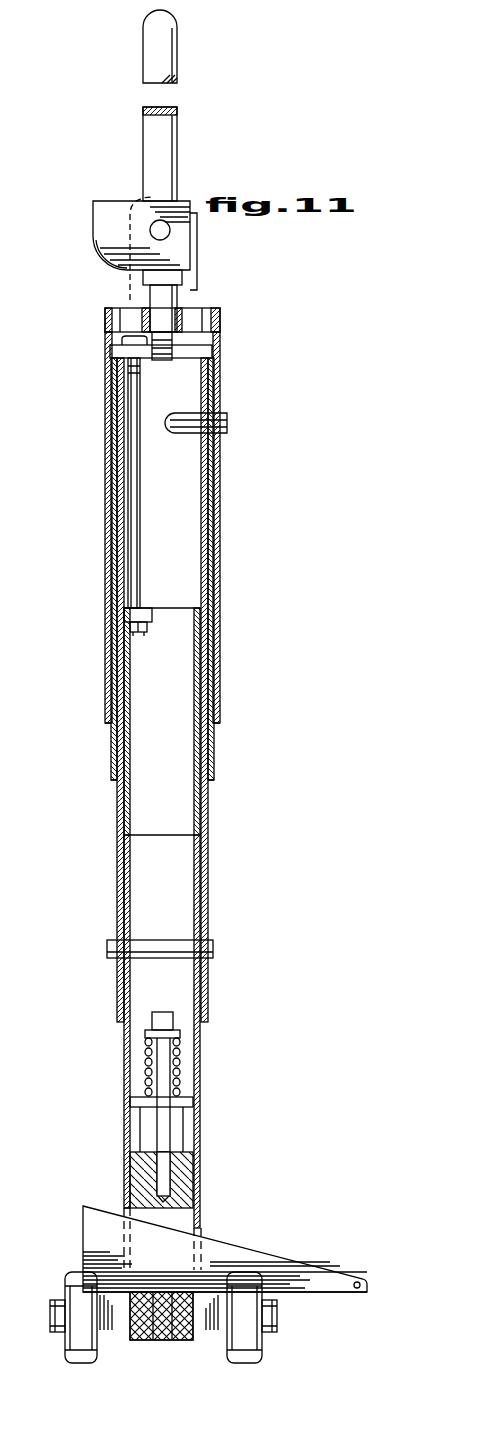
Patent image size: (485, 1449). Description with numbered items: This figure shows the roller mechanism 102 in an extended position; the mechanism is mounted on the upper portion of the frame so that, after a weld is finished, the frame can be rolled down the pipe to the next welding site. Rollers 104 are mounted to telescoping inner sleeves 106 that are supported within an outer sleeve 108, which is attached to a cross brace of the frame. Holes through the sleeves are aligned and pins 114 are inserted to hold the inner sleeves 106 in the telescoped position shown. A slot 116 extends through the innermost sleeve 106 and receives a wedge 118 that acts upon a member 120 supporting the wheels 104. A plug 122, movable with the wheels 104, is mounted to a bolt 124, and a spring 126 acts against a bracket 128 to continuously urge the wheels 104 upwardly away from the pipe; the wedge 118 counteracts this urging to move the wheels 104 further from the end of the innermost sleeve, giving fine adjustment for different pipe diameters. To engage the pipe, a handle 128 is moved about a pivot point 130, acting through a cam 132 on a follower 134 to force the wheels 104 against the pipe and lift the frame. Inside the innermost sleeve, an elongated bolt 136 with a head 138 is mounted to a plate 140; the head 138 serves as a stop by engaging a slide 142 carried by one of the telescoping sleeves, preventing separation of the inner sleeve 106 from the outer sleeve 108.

The roller mechanism 102 is at (220, 306).
The rollers 104 is at (78, 1284).
The telescoping inner sleeves 106 is at (203, 1150).
The outer sleeve 108 is at (221, 496).
The pins 114 is at (228, 428).
The slot 116 is at (204, 1222).
The wedge 118 is at (280, 1244).
The member 120 is at (150, 1340).
The plug 122 is at (140, 1167).
The bolt 124 is at (157, 1014).
The spring 126 is at (176, 1058).
The handle 128 is at (180, 160).
The pivot point 130 is at (170, 229).
The cam 132 is at (98, 254).
The follower 134 is at (130, 283).
The elongated bolt 136 is at (142, 500).
The head 138 is at (146, 632).
The plate 140 is at (194, 352).
The slide 142 is at (141, 612).